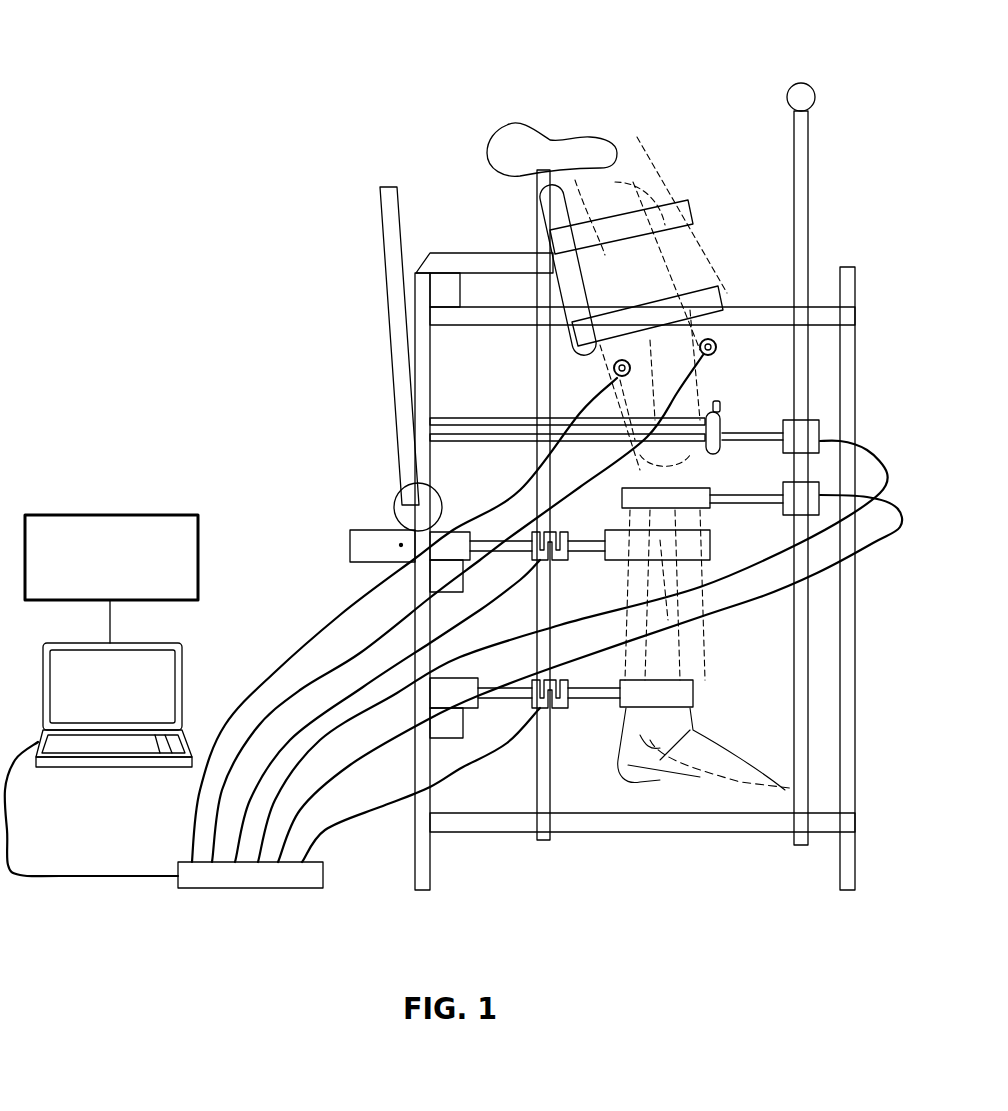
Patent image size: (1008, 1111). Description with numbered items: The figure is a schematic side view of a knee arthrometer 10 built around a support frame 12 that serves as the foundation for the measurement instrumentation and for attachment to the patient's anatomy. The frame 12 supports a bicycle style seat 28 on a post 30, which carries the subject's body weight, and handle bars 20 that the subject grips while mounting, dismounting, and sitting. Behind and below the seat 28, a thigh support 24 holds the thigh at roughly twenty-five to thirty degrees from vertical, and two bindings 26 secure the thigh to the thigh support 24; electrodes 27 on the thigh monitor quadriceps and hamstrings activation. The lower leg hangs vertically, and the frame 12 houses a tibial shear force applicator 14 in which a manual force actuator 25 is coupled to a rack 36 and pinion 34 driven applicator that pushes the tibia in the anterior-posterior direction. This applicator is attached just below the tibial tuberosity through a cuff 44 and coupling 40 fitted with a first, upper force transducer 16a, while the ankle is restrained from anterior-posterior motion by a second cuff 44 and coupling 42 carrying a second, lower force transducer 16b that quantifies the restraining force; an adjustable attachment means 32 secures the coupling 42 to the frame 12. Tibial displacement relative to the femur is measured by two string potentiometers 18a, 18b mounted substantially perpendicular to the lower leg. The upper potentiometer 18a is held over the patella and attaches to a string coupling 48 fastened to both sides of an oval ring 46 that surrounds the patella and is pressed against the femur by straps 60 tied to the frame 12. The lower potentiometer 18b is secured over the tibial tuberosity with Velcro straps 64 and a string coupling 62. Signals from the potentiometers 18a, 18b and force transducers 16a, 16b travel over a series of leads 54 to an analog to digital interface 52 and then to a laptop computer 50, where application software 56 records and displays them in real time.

The knee arthrometer 10 is at (150, 52).
The support frame 12 is at (856, 662).
The tibial shear force applicator 14 is at (338, 497).
The first force transducer 16a is at (563, 562).
The second force transducer 16b is at (540, 712).
The first string potentiometer 18a is at (823, 422).
The second string potentiometer 18b is at (823, 486).
The handle bars 20 is at (808, 232).
The thigh support 24 is at (553, 217).
The manual force actuator 25 is at (388, 283).
The bindings 26 is at (698, 213).
The electrodes 27 is at (614, 372).
The bicycle style seat 28 is at (560, 137).
The post 30 is at (537, 357).
The adjustable attachment means 32 is at (452, 700).
The pinion 34 is at (398, 500).
The rack 36 is at (350, 553).
The coupling 40 is at (490, 533).
The coupling 42 is at (580, 710).
The cuff 44 is at (630, 533).
The oval ring 46 is at (718, 410).
The string coupling 48 is at (766, 443).
The laptop computer 50 is at (93, 774).
The analog to digital interface 52 is at (276, 889).
The leads 54 is at (242, 692).
The application software 56 is at (117, 514).
The straps 60 is at (500, 418).
The string coupling 62 is at (760, 504).
The Velcro straps 64 is at (636, 490).